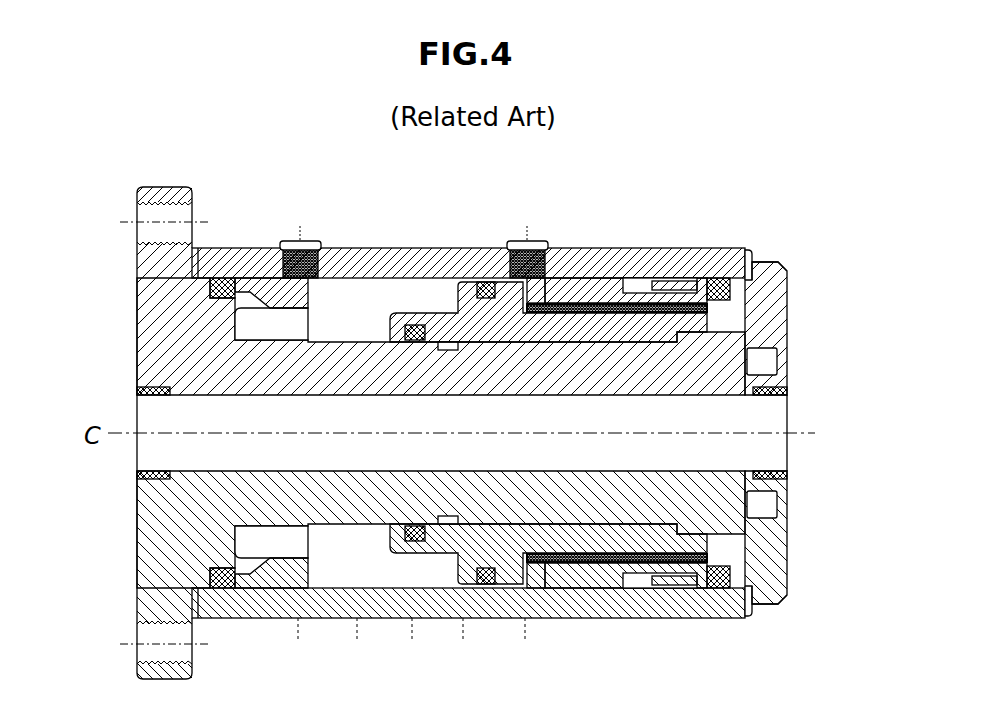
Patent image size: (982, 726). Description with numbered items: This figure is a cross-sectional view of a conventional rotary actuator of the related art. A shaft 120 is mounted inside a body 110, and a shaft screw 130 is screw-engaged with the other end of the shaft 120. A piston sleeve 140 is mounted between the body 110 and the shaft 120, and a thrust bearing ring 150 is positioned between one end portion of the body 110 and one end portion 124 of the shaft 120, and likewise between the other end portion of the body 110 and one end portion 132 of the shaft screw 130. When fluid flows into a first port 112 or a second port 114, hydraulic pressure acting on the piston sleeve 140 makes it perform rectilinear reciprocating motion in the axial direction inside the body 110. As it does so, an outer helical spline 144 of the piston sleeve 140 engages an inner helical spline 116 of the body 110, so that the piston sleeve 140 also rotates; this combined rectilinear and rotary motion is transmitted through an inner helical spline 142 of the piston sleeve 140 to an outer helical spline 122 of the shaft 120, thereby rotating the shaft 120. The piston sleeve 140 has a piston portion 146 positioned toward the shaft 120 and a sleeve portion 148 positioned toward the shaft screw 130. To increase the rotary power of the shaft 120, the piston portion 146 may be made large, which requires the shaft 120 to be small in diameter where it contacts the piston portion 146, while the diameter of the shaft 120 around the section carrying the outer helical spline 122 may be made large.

The body 110 is at (658, 248).
The first port 112 is at (296, 620).
The second port 114 is at (528, 585).
The inner helical spline 116 is at (548, 300).
The shaft 120 is at (137, 352).
The outer helical spline 122 is at (485, 345).
The one end portion 124 is at (140, 262).
The shaft screw 130 is at (789, 288).
The one end portion 132 is at (756, 270).
The piston sleeve 140 is at (450, 312).
The inner helical spline 142 is at (675, 335).
The outer helical spline 144 is at (636, 293).
The piston portion 146 is at (483, 550).
The sleeve portion 148 is at (590, 550).
The thrust bearing ring 150 is at (198, 250).